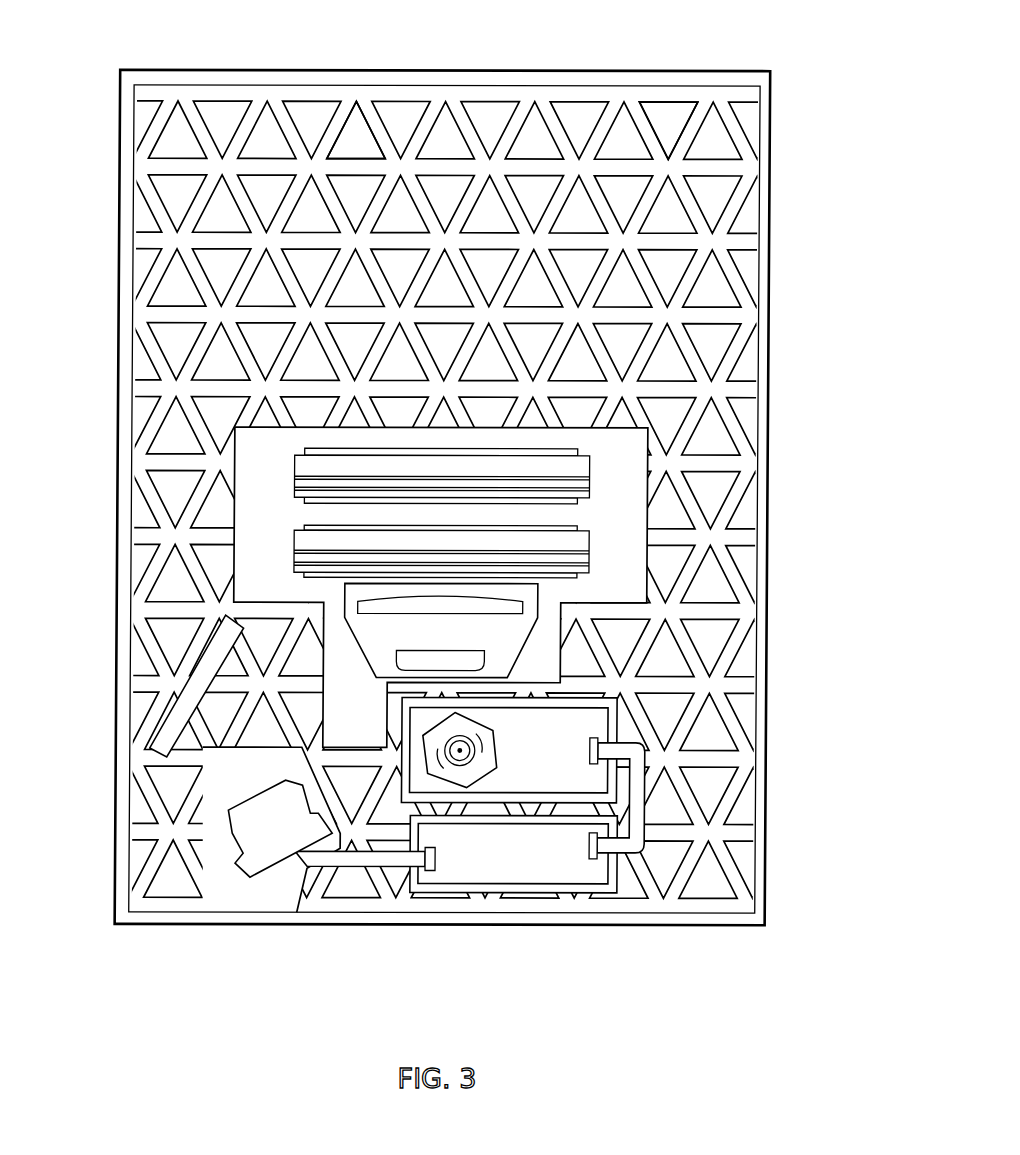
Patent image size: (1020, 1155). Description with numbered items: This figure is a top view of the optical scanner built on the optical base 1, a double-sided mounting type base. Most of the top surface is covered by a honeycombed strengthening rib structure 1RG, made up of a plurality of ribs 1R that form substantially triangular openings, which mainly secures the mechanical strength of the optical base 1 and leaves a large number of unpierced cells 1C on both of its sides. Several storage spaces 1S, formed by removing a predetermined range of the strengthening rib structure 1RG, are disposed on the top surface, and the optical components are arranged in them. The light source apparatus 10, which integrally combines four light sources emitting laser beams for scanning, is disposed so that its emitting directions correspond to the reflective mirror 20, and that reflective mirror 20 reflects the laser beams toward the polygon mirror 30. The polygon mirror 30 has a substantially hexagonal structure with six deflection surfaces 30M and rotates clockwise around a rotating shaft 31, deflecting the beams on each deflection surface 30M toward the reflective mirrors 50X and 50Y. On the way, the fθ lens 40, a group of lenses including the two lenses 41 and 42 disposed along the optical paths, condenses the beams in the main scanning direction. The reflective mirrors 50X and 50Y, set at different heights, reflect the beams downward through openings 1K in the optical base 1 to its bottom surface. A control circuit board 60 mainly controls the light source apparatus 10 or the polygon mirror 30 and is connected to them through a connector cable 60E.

The optical base 1 is at (242, 71).
The rib 1R is at (448, 168).
The unpierced cell 1C is at (667, 113).
The strengthening rib structure 1RG is at (735, 214).
The opening 1K is at (307, 528).
The storage space 1S is at (633, 589).
The reflective mirror 50Y is at (587, 485).
The reflective mirror 50X is at (587, 547).
The fθ lens 40 is at (274, 624).
The lens 41 is at (414, 661).
The lens 42 is at (376, 605).
The reflective mirror 20 is at (204, 690).
The polygon mirror 30 is at (490, 724).
The deflection surface 30M is at (499, 743).
The rotating shaft 31 is at (480, 771).
The control circuit board 60 is at (545, 872).
The connector cable 60E is at (637, 812).
The light source apparatus 10 is at (287, 855).